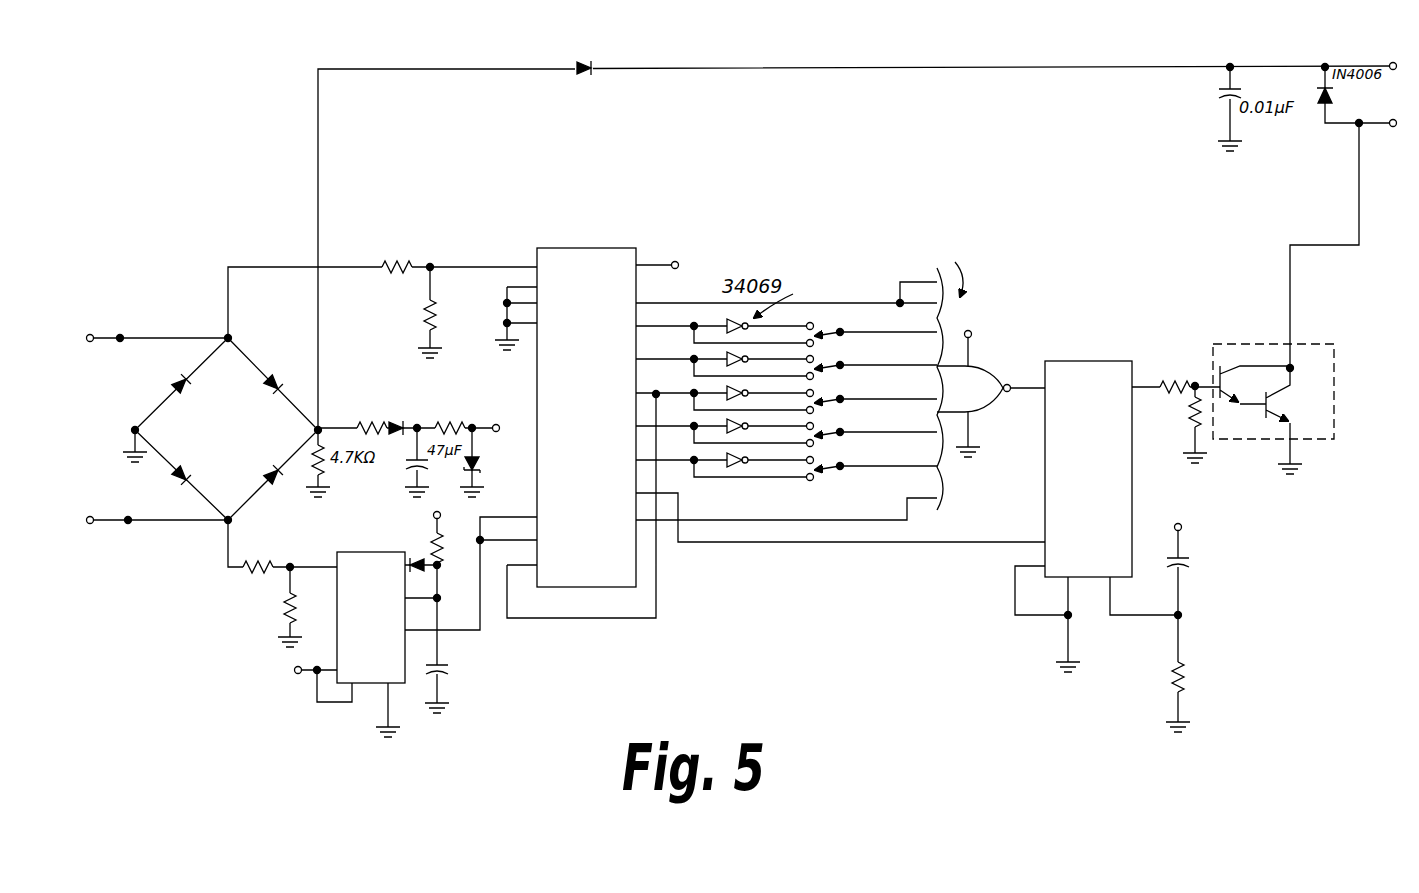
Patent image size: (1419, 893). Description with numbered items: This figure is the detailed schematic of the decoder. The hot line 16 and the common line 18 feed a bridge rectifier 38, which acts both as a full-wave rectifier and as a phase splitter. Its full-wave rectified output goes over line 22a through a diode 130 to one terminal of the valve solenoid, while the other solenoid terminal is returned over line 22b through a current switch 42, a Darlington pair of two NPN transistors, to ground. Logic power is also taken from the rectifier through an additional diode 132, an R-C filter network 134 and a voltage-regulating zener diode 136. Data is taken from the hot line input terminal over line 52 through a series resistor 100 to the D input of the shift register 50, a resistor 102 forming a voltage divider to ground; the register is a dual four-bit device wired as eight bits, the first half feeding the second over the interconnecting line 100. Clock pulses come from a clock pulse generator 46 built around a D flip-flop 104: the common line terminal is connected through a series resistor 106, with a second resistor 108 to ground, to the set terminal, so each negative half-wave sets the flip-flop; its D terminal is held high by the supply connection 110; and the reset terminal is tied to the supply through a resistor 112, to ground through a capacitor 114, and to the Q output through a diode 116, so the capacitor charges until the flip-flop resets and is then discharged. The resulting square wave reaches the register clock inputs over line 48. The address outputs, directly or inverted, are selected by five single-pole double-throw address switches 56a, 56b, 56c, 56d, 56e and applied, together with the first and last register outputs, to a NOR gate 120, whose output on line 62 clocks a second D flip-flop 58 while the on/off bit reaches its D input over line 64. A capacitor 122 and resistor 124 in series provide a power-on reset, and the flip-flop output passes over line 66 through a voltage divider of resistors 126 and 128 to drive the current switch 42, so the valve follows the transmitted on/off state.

The line 22a is at (400, 69).
The diode 130 is at (598, 66).
The line 22b is at (1359, 176).
The hot line 16 is at (153, 338).
The common line 18 is at (160, 520).
The bridge rectifier 38 is at (238, 475).
The line 52 is at (248, 267).
The series resistor 100 is at (388, 273).
The second resistor 102 is at (434, 312).
The additional diode 132 is at (393, 437).
The R-C filter network 134 is at (458, 394).
The voltage-regulating zener diode 136 is at (502, 481).
The shift register 50 is at (636, 250).
The address switch 56a is at (834, 328).
The address switch 56b is at (834, 361).
The address switch 56c is at (834, 395).
The address switch 56d is at (834, 428).
The address switch 56e is at (834, 462).
The line 64 is at (752, 543).
The NOR gate 120 is at (990, 410).
The line 62 is at (1013, 383).
The flip-flop 58 is at (1069, 361).
The capacitor 122 is at (1187, 558).
The resistor 124 is at (1181, 676).
The line 66 is at (1136, 386).
The resistor 126 is at (1170, 402).
The resistor 128 is at (1199, 437).
The current switch 42 is at (1299, 344).
The series resistor 106 is at (250, 578).
The second resistor 108 is at (290, 625).
The D flip-flop 104 is at (337, 588).
The power supply voltage connection 110 is at (310, 677).
The diode 116 is at (428, 573).
The resistor 112 is at (447, 553).
The capacitor 114 is at (447, 676).
The clock pulse generator 46 is at (436, 722).
The line 48 is at (483, 625).